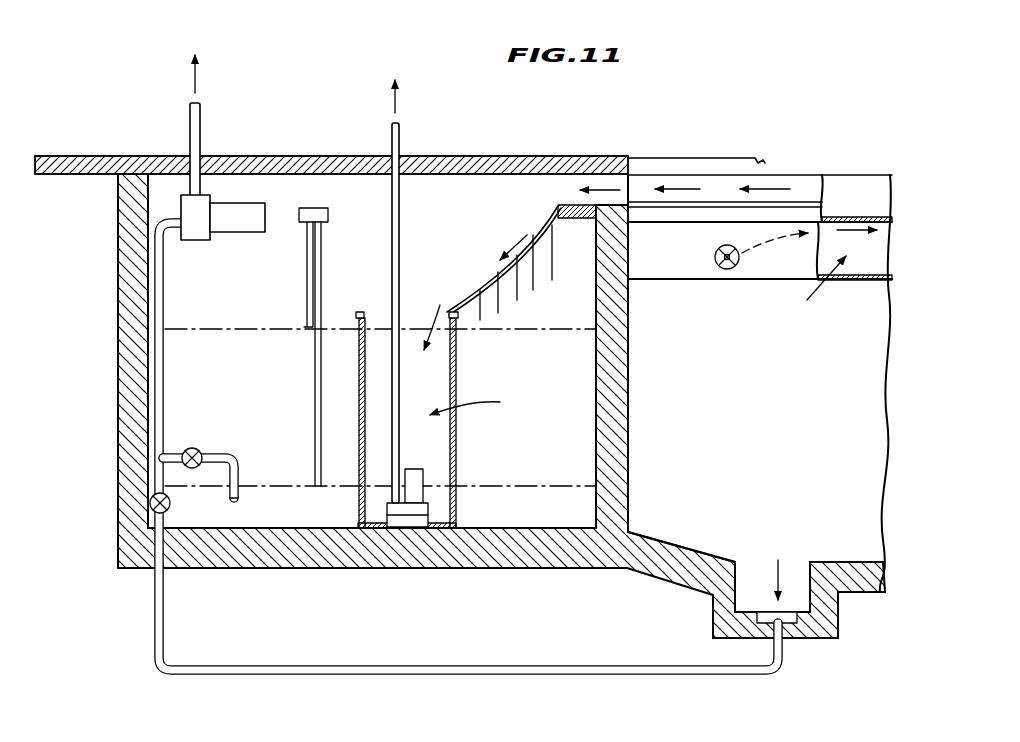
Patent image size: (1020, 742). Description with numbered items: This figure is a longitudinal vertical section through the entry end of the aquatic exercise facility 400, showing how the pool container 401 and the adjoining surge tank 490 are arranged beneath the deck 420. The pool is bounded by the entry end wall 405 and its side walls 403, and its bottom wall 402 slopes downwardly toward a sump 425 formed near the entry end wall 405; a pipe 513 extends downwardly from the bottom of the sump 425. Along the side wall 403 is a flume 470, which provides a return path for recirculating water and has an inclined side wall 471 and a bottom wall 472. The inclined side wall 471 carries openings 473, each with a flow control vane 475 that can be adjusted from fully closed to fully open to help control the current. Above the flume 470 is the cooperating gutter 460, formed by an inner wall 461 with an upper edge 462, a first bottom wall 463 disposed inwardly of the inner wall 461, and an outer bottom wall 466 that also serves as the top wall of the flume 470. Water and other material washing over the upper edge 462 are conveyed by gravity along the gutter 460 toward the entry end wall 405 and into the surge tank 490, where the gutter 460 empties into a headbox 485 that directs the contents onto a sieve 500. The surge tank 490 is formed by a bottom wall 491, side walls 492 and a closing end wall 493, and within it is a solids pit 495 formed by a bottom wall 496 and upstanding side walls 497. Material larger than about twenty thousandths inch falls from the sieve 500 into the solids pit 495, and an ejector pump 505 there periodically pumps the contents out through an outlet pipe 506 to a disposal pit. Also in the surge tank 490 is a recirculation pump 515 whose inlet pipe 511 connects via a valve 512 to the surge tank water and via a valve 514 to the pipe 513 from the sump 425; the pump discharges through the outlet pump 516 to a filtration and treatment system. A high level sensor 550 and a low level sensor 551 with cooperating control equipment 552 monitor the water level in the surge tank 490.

The aquatic exercise facility 400 is at (135, 78).
The container 401 is at (862, 325).
The bottom wall 402 is at (830, 545).
The side wall 403 is at (790, 413).
The entry end wall 405 is at (623, 380).
The deck 420 is at (90, 160).
The sump 425 is at (800, 598).
The gutter 460 is at (840, 185).
The inner wall 461 is at (805, 182).
The upper edge 462 is at (780, 175).
The first bottom wall 463 is at (713, 202).
The outer bottom wall 466 is at (867, 215).
The flume 470 is at (805, 290).
The inclined side wall 471 is at (665, 270).
The bottom wall 472 is at (872, 281).
The opening 473 is at (715, 257).
The flow control vane 475 is at (725, 270).
The headbox 485 is at (575, 205).
The surge tank 490 is at (200, 284).
The bottom wall 491 is at (491, 558).
The side wall 492 is at (455, 219).
The closing end wall 493 is at (130, 392).
The solids pit 495 is at (481, 405).
The bottom wall 496 is at (440, 525).
The side wall 497 is at (364, 330).
The sieve 500 is at (487, 285).
The ejector pump 505 is at (407, 512).
The outlet pipe 506 is at (401, 142).
The pipe 511 is at (163, 392).
The valve 512 is at (197, 449).
The pipe 513 is at (215, 668).
The valve 514 is at (152, 510).
The recirculation pump 515 is at (238, 203).
The outlet pump 516 is at (201, 121).
The high level sensor 550 is at (307, 293).
The low level sensor 551 is at (315, 461).
The control equipment 552 is at (318, 208).